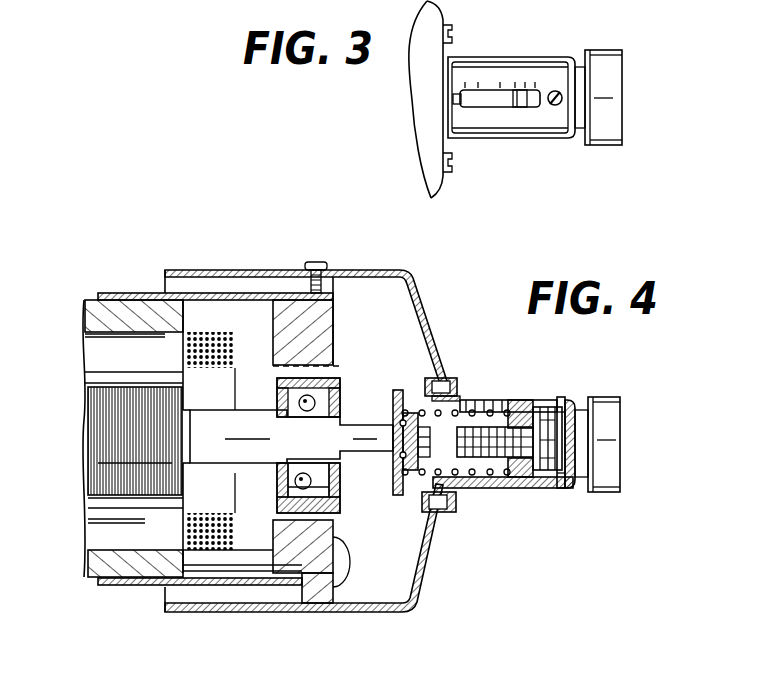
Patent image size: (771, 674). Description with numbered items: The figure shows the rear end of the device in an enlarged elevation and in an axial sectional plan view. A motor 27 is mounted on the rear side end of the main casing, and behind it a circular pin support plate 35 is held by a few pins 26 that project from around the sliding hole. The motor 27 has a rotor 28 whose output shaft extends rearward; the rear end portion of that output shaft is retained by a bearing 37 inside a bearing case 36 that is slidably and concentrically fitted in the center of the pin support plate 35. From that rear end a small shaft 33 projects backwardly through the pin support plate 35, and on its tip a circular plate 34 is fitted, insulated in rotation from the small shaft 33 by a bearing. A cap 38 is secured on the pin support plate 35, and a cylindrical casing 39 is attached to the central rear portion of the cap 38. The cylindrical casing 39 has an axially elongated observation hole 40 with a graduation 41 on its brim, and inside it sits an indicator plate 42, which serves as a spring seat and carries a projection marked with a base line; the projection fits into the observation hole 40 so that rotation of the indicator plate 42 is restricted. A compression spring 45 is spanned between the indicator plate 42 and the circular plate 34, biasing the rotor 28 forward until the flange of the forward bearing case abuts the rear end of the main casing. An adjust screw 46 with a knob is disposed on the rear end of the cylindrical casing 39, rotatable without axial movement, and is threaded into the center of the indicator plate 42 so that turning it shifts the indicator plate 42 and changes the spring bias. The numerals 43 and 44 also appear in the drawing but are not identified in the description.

In FIG. 4, the pins 26 is at (218, 566).
In FIG. 4, the motor 27 is at (68, 337).
In FIG. 4, the rotor 28 is at (97, 470).
In FIG. 4, the small shaft 33 is at (362, 431).
In FIG. 4, the circular plate 34 is at (398, 496).
In FIG. 4, the pin support plate 35 is at (320, 329).
In FIG. 4, the bearing case 36 is at (336, 491).
In FIG. 4, the bearing 37 is at (282, 487).
In FIG. 4, the cap 38 is at (196, 271).
In FIG. 3, the cylindrical casing 39 is at (538, 58).
In FIG. 4, the cylindrical casing 39 is at (452, 490).
In FIG. 3, the observation hole 40 is at (490, 101).
In FIG. 4, the observation hole 40 is at (483, 400).
In FIG. 3, the graduation 41 is at (484, 88).
In FIG. 4, the indicator plate 42 is at (535, 468).
In FIG. 3, the screw 43 is at (532, 103).
In FIG. 4, the screw 43 is at (524, 401).
In FIG. 3, the pin 44 is at (514, 107).
In FIG. 4, the compression spring 45 is at (430, 377).
In FIG. 3, the adjust screw 46 is at (612, 87).
In FIG. 4, the adjust screw 46 is at (483, 458).